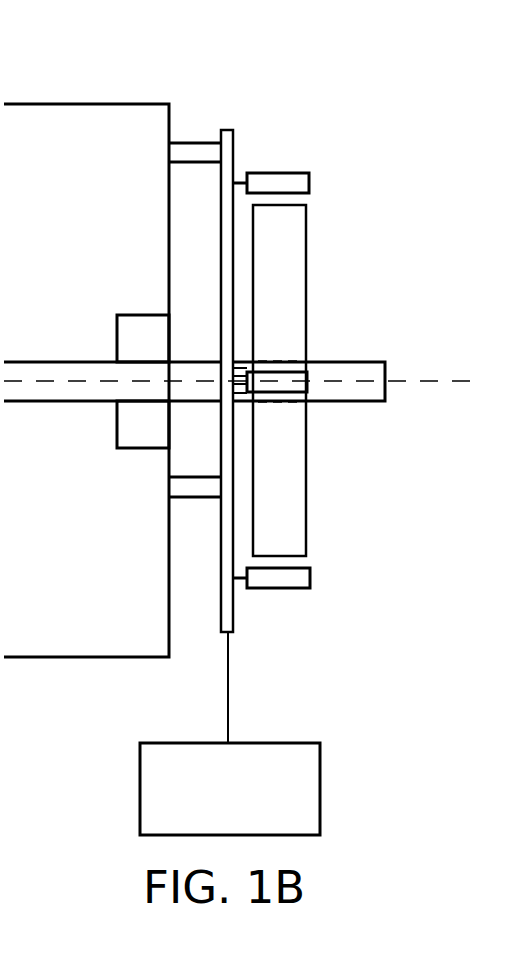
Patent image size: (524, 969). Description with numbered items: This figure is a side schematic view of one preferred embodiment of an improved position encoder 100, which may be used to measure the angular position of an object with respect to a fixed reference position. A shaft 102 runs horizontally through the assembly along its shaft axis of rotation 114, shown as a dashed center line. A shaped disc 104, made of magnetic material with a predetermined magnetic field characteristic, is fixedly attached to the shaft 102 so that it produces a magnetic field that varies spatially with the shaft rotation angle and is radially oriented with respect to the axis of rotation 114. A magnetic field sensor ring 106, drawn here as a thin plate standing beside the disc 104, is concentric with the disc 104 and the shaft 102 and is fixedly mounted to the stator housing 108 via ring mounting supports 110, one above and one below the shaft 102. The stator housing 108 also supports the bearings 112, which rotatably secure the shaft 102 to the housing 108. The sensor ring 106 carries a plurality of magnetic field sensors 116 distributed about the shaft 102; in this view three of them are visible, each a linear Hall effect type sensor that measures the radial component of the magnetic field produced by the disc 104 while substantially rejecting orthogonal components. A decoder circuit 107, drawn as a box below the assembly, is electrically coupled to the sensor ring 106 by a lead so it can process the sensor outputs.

The position encoder 100 is at (256, 435).
The shaft 102 is at (333, 361).
The shaped disc 104 is at (292, 518).
The magnetic field sensor ring 106 is at (233, 130).
The decoder circuit 107 is at (312, 760).
The stator housing 108 is at (88, 103).
The ring mounting supports 110 is at (190, 140).
The bearings 112 is at (145, 332).
The shaft axis of rotation 114 is at (405, 380).
The magnetic field sensors 116 is at (283, 172).